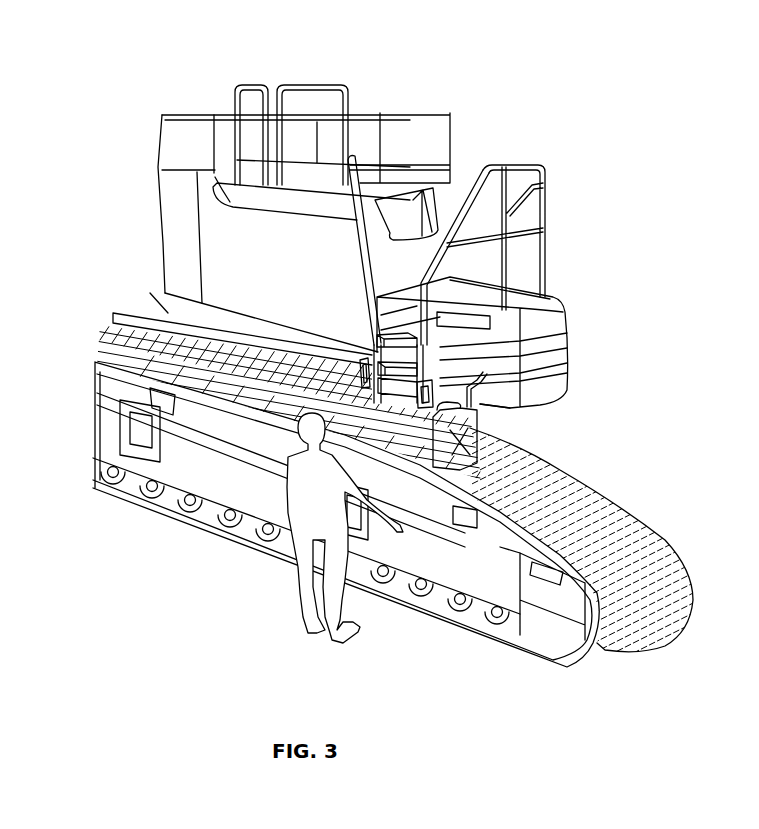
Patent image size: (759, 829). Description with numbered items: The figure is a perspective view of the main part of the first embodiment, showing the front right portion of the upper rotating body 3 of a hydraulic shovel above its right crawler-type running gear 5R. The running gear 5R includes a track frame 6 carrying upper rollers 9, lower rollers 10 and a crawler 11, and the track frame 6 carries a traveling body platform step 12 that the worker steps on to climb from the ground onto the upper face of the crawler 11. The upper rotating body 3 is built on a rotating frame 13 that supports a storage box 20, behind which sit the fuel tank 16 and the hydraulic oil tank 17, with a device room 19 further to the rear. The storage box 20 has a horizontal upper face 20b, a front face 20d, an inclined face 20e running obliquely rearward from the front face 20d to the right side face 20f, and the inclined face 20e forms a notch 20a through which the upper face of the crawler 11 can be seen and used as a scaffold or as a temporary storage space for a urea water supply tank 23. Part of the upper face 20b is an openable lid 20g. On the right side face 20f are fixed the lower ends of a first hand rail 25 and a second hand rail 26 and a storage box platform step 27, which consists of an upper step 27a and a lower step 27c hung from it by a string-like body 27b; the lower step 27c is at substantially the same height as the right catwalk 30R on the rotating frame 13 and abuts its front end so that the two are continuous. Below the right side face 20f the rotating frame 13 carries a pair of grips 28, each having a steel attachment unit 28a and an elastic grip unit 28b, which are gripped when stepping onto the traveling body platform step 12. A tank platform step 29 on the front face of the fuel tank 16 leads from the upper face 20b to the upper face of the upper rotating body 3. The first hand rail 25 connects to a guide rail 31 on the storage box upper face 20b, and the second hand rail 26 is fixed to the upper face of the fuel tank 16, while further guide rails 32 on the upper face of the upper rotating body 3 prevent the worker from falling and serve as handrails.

The upper rotating body 3 is at (180, 92).
The right crawler-type running gear 5R is at (655, 520).
The track frame 6 is at (252, 490).
The upper roller 9 is at (150, 386).
The lower roller 10 is at (213, 521).
The crawler 11 is at (583, 510).
The traveling body platform step 12 is at (137, 455).
The rotating frame 13 is at (540, 383).
The fuel tank 16 is at (352, 212).
The hydraulic oil tank 17 is at (298, 185).
The device room 19 is at (183, 147).
The storage box 20 is at (560, 285).
The notch 20a is at (495, 350).
The upper face 20b is at (462, 290).
The front face 20d is at (547, 340).
The inclined face 20e is at (500, 340).
The right side face 20f is at (377, 300).
The lid 20g is at (520, 288).
The urea water supply tank 23 is at (482, 433).
The first hand rail 25 is at (414, 290).
The second hand rail 26 is at (367, 280).
The storage box platform step 27 is at (424, 348).
The upper step 27a is at (373, 316).
The string-like body 27b is at (377, 348).
The lower step 27c is at (105, 355).
The grip 28 is at (110, 331).
The attachment unit 28a is at (543, 367).
The grip unit 28b is at (420, 410).
The tank platform step 29 is at (385, 330).
The right catwalk 30R is at (150, 293).
The guide rail 31 is at (530, 166).
The guide rail 32 is at (250, 80).